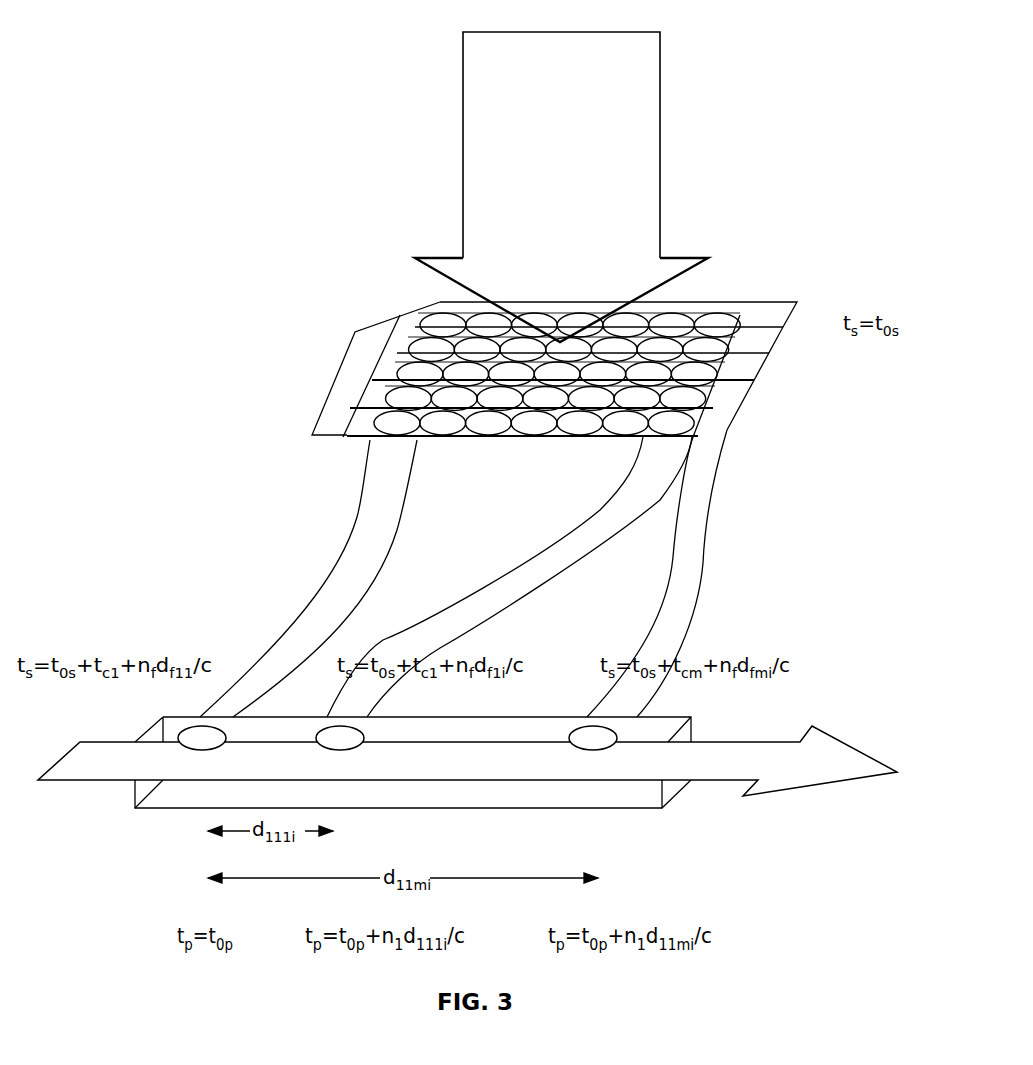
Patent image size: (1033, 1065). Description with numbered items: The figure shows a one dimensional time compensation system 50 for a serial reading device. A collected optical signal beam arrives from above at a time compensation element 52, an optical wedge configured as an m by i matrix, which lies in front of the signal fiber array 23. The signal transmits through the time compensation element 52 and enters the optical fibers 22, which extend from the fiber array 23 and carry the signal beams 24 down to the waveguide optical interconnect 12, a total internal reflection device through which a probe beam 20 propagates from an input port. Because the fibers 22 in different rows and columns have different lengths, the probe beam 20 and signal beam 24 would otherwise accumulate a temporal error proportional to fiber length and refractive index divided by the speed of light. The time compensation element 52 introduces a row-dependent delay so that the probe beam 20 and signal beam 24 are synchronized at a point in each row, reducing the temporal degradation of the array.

The one dimensional time compensation system 50 is at (579, 175).
The time compensation element 52 is at (362, 355).
The signal fiber array 23 is at (345, 438).
The optical fibers 22 is at (358, 512).
The signal beam 24 is at (190, 727).
The probe beam 20 is at (105, 775).
The waveguide optical interconnect 12 is at (650, 797).